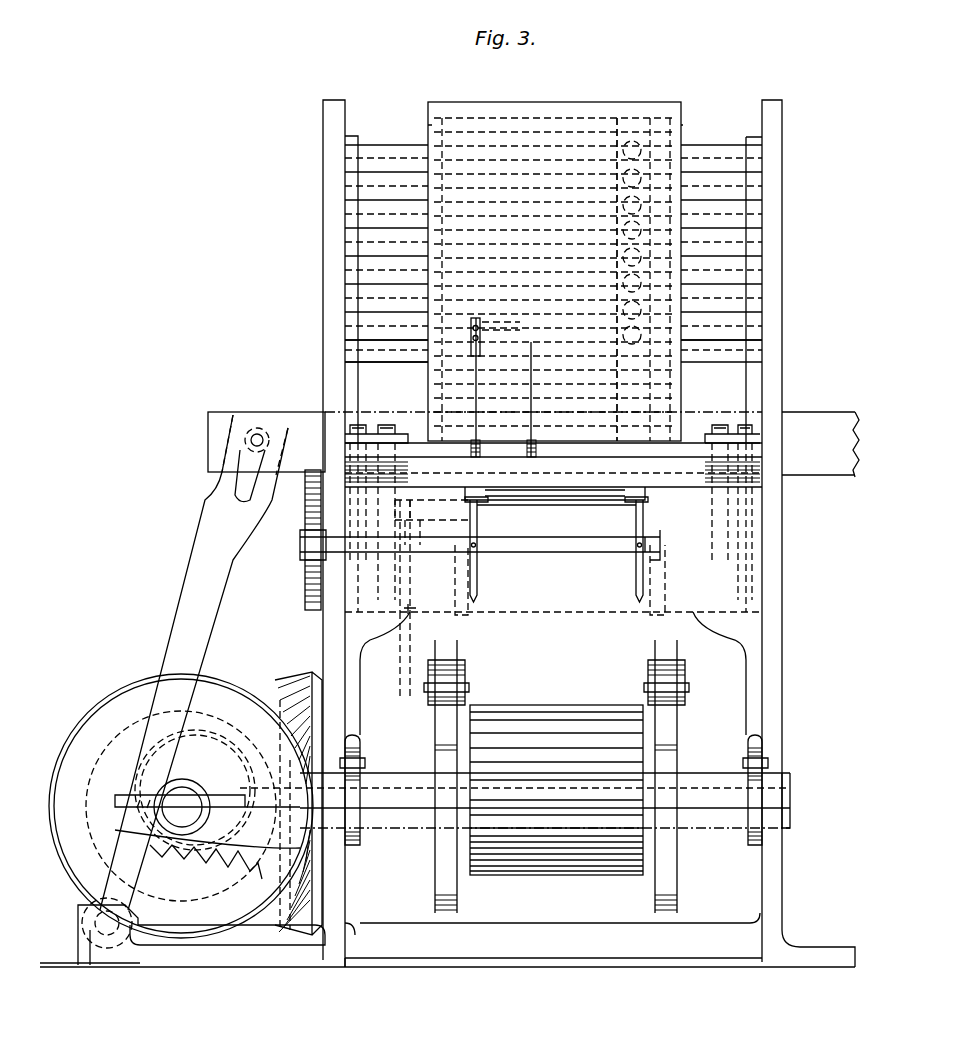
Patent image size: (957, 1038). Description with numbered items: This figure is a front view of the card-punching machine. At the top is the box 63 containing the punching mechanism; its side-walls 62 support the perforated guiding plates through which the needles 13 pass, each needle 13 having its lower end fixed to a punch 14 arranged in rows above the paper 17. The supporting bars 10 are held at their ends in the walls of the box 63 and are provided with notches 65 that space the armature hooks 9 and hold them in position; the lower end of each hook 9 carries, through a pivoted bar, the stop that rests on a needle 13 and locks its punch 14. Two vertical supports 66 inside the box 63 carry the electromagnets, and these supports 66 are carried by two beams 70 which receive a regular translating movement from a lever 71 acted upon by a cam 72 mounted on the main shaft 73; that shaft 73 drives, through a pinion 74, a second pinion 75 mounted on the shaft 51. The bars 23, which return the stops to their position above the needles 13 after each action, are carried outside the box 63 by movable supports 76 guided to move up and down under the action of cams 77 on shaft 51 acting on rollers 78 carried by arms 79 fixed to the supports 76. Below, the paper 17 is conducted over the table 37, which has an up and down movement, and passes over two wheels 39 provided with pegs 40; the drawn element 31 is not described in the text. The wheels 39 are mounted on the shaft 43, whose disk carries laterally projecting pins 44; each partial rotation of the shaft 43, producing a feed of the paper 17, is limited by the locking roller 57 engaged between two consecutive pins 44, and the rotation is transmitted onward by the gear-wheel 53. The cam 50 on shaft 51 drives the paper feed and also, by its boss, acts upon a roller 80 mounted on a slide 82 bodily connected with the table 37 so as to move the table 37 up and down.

The supporting hook 9 is at (472, 330).
The bar 10 is at (597, 247).
The needle 13 is at (533, 395).
The punch 14 is at (553, 474).
The paper 17 is at (570, 497).
The bars 23 is at (410, 366).
The drum 31 is at (540, 877).
The table 37 is at (540, 503).
The wheels 39 is at (478, 517).
The pegs 40 is at (635, 508).
The shaft 43 is at (540, 554).
The pins 44 is at (432, 522).
The cam 50 is at (433, 862).
The shaft 51 is at (410, 828).
The gear-wheel 53 is at (304, 573).
The locking roller 57 is at (415, 650).
The side-walls 62 is at (430, 125).
The box 63 is at (547, 108).
The notches 65 is at (502, 339).
The vertical supports 66 is at (622, 385).
The beams 70 is at (822, 418).
The lever 71 is at (215, 538).
The cam 72 is at (207, 720).
The shaft 73 is at (188, 797).
The pinion 74 is at (105, 718).
The pinion 75 is at (300, 692).
The movable supports 76 is at (352, 386).
The cams 77 is at (553, 819).
The rollers 78 is at (366, 750).
The arms 79 is at (358, 698).
The roller 80 is at (655, 670).
The slide 82 is at (582, 612).